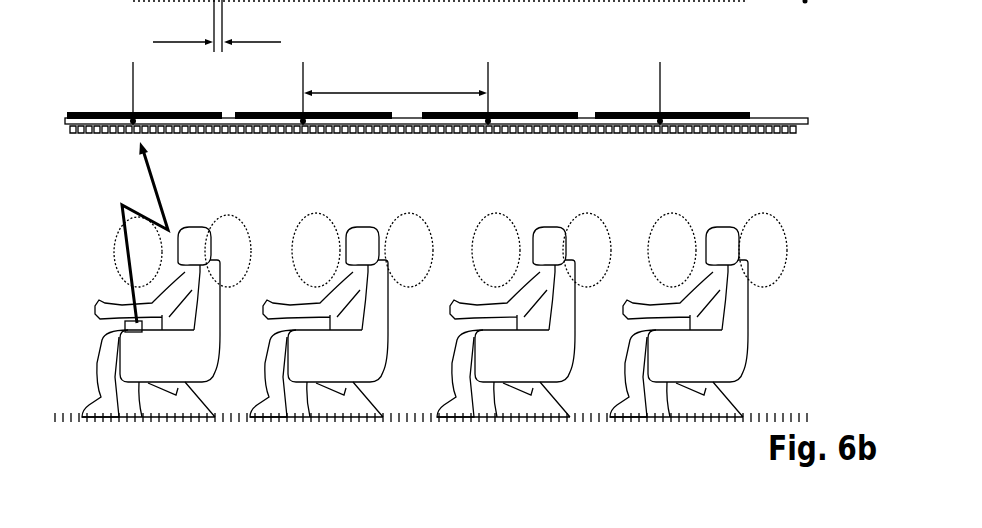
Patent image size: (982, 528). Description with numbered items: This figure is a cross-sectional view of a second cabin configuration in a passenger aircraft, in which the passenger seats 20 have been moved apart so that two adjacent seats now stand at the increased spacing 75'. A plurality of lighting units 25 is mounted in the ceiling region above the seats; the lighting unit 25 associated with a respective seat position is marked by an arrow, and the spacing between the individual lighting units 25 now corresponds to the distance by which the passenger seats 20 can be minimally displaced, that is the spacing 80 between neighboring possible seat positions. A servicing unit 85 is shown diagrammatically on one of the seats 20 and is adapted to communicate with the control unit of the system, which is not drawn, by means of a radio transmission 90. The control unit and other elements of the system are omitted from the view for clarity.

The passenger seat 20 is at (130, 352).
The lighting unit 25 is at (729, 127).
The spacing between adjacent passenger seats 75' is at (395, 64).
The spacing between neighboring possible seat positions 80 is at (230, 29).
The servicing unit 85 is at (122, 332).
The radio transmission from servicing unit to control unit 90 is at (118, 208).